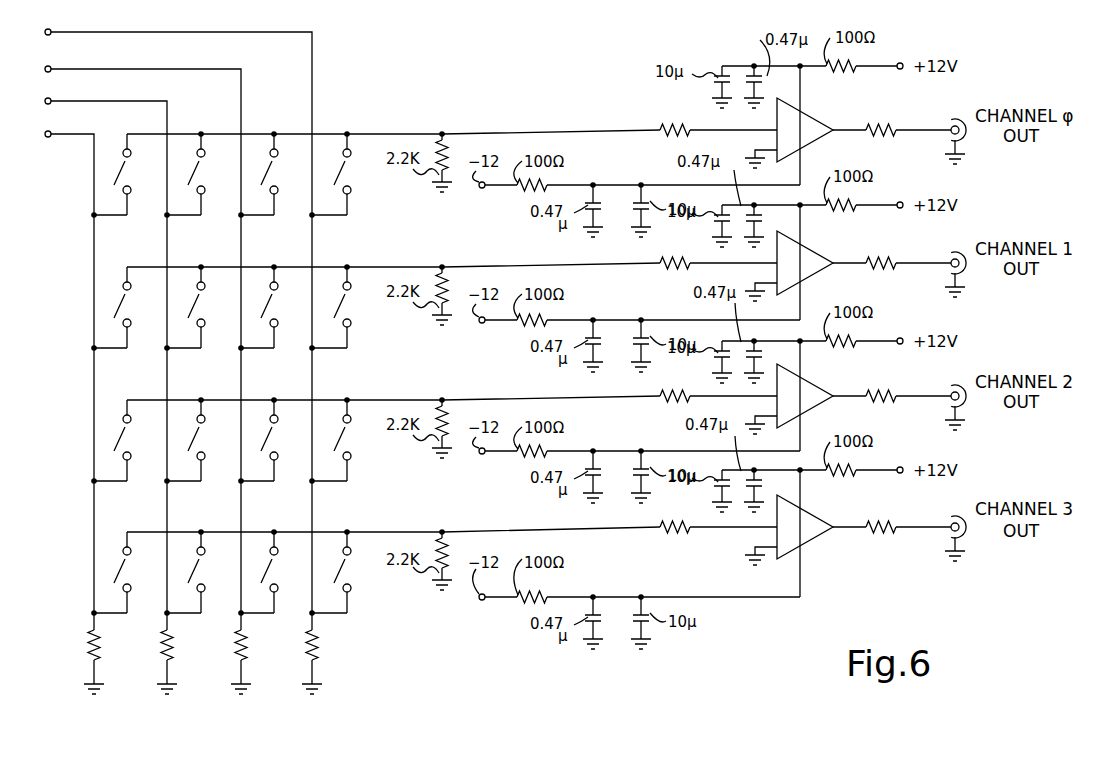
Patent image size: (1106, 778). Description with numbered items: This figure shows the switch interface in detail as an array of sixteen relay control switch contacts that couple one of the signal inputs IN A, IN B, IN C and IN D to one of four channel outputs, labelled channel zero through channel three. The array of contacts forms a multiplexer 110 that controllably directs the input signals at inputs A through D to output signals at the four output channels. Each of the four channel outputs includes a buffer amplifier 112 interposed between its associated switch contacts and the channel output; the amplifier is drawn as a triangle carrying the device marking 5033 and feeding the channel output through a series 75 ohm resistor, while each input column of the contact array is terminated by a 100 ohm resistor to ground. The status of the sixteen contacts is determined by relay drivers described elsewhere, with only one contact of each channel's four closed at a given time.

The multiplexer 110 is at (80, 423).
The buffer amplifier 112 is at (817, 343).
The amplifier integrated circuit 5033 is at (805, 328).
The 100 ohm termination resistor 100 is at (298, 680).
The 75 ohm series resistor 75 is at (770, 332).